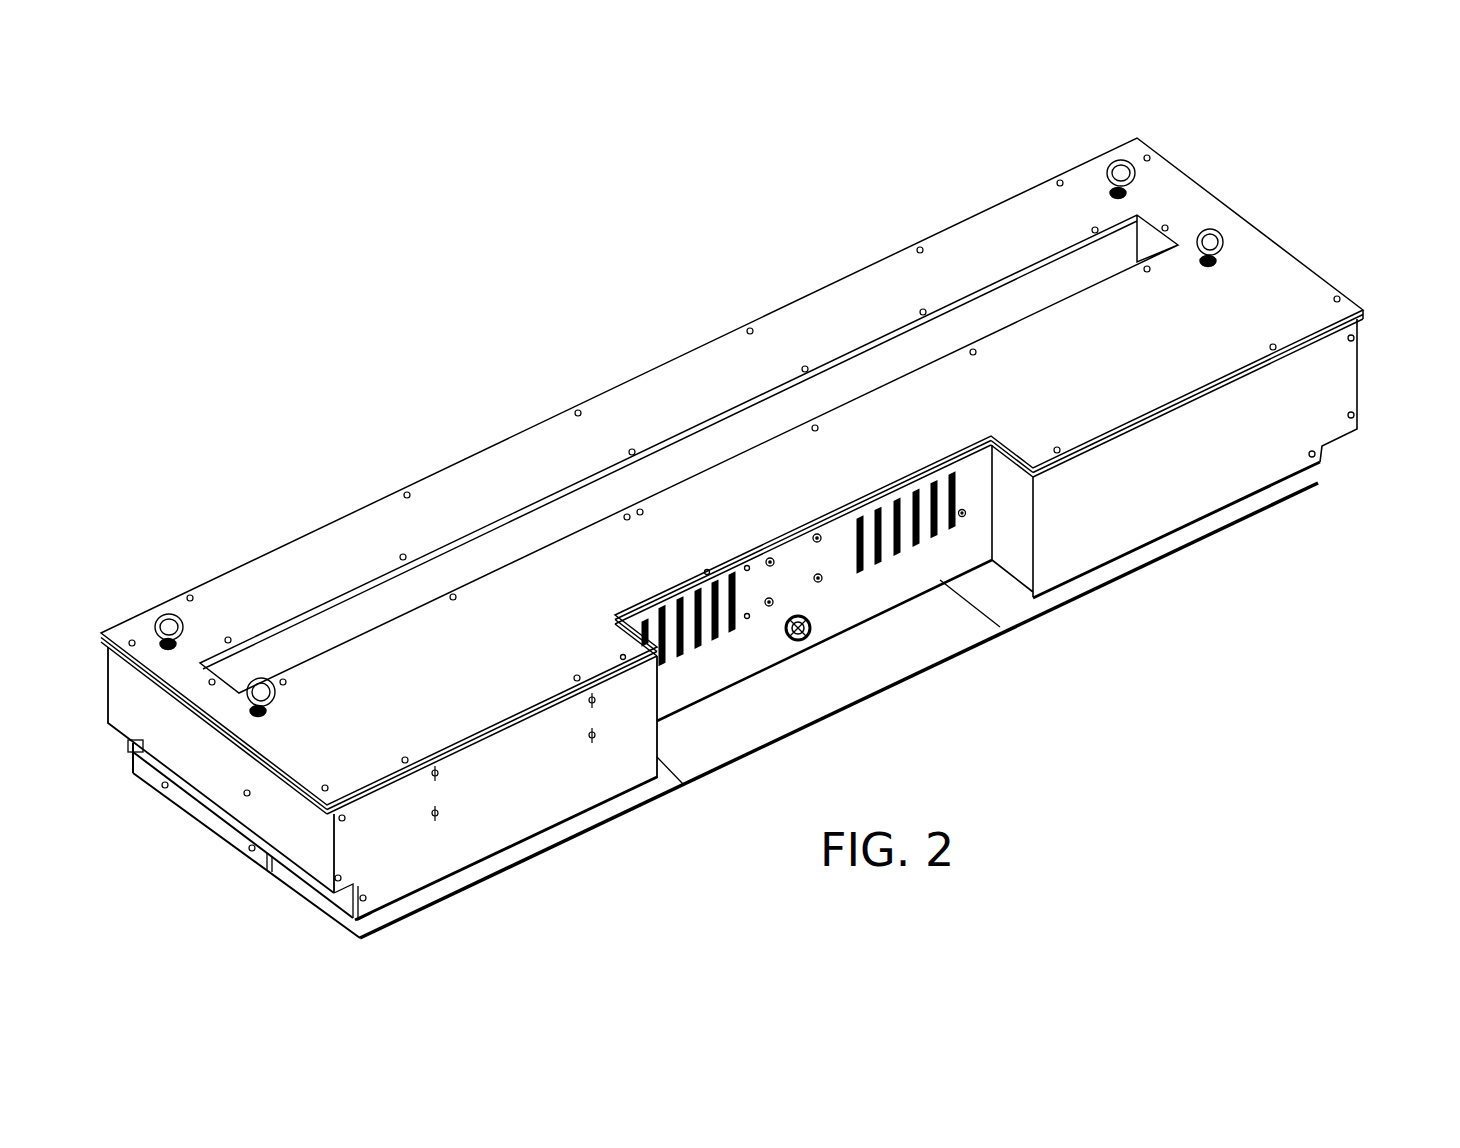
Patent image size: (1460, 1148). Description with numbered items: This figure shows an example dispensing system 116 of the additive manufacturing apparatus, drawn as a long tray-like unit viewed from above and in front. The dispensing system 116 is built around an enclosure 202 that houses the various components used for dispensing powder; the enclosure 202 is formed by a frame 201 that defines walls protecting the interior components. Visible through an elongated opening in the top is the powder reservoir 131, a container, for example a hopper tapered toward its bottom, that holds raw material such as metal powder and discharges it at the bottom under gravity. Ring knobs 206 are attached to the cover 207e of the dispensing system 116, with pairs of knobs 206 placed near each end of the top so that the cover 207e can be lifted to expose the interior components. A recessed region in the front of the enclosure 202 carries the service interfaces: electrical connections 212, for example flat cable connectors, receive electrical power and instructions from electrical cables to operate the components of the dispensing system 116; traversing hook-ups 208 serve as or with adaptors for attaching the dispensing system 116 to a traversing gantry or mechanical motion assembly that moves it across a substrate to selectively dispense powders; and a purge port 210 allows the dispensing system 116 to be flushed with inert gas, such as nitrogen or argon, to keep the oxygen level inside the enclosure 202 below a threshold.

The dispensing system 116 is at (1297, 93).
The powder reservoir 131 is at (828, 398).
The frame 201 is at (1336, 413).
The enclosure 202 is at (1332, 359).
The knobs 206 is at (167, 612).
The top plate 207e is at (367, 510).
The traversing hook-ups 208 is at (807, 561).
The purge ports 210 is at (773, 602).
The electrical connections 212 is at (962, 513).